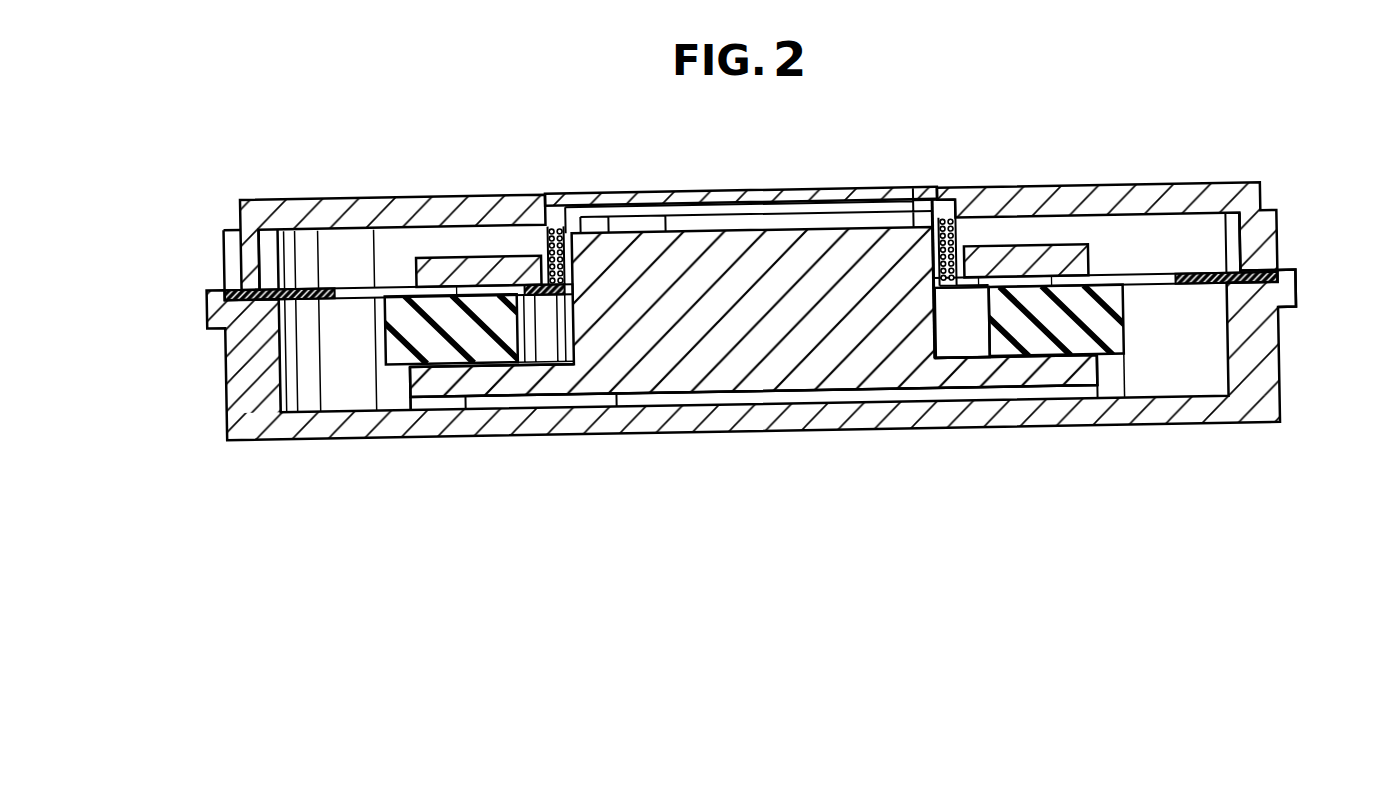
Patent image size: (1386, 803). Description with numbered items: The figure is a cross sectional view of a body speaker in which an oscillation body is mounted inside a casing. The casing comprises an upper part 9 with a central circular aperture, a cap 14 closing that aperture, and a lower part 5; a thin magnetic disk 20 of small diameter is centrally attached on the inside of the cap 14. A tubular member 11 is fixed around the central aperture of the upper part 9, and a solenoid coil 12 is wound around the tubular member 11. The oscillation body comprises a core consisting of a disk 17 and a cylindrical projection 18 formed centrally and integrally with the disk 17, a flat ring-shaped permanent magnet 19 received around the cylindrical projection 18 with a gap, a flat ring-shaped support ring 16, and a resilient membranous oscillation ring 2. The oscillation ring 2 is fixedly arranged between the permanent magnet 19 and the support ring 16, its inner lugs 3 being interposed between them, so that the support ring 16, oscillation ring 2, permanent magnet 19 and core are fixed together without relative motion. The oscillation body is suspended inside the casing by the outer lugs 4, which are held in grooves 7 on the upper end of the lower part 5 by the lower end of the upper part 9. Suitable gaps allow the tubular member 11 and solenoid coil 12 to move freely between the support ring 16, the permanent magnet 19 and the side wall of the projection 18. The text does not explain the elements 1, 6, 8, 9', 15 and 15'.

The piezoelectric element 1 is at (1127, 268).
The resilient membranous oscillation ring 2 is at (1197, 268).
The inner lugs 3 is at (957, 268).
The outer lugs 4 is at (1298, 277).
The lower part 5 is at (1283, 365).
The side wall 6 is at (246, 268).
The grooves 7 is at (266, 304).
The support block 8 is at (1162, 387).
The upper part 9 is at (758, 210).
The cap side wall 9' is at (1283, 241).
The tubular member 11 is at (722, 223).
The solenoid coil 12 is at (545, 240).
The cap 14 is at (904, 190).
The bottom plate 15 is at (753, 435).
The spacer block 15' is at (962, 382).
The support ring 16 is at (436, 268).
The disk 17 is at (551, 388).
The cylindrical projection 18 is at (640, 245).
The permanent magnet 19 is at (395, 362).
The magnetic disk 20 is at (778, 197).